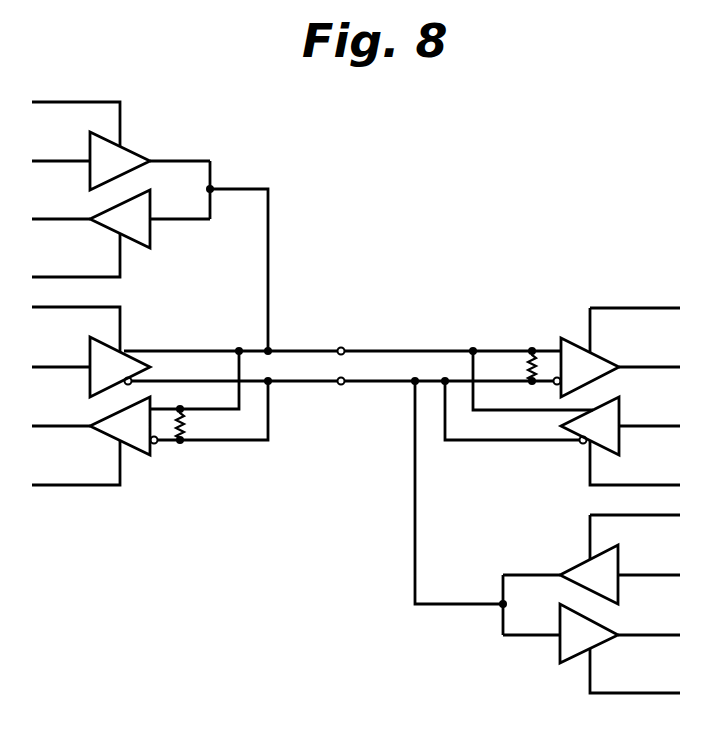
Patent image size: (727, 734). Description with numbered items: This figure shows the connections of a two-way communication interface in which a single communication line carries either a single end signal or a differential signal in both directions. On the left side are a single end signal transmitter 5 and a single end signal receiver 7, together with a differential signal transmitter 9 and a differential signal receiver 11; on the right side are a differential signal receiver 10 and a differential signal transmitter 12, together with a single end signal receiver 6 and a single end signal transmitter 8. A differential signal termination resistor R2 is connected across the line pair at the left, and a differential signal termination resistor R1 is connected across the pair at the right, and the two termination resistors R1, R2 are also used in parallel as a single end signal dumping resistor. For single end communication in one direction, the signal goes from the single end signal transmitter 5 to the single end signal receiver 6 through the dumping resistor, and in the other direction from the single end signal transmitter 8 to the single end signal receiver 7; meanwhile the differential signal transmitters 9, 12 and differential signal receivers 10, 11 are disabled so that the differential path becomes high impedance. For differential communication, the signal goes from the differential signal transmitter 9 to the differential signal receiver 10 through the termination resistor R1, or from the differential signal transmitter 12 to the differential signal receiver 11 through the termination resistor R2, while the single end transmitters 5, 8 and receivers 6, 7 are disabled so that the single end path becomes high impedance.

The single end signal transmitter 5 is at (133, 142).
The single end signal receiver 6 is at (560, 652).
The single end signal receiver 7 is at (150, 233).
The single end signal transmitter 8 is at (618, 562).
The differential signal transmitter 9 is at (90, 352).
The differential signal receiver 10 is at (577, 343).
The differential signal receiver 11 is at (105, 432).
The differential signal transmitter 12 is at (620, 442).
The differential signal termination resistor R1 is at (513, 366).
The differential signal termination resistor R2 is at (199, 424).